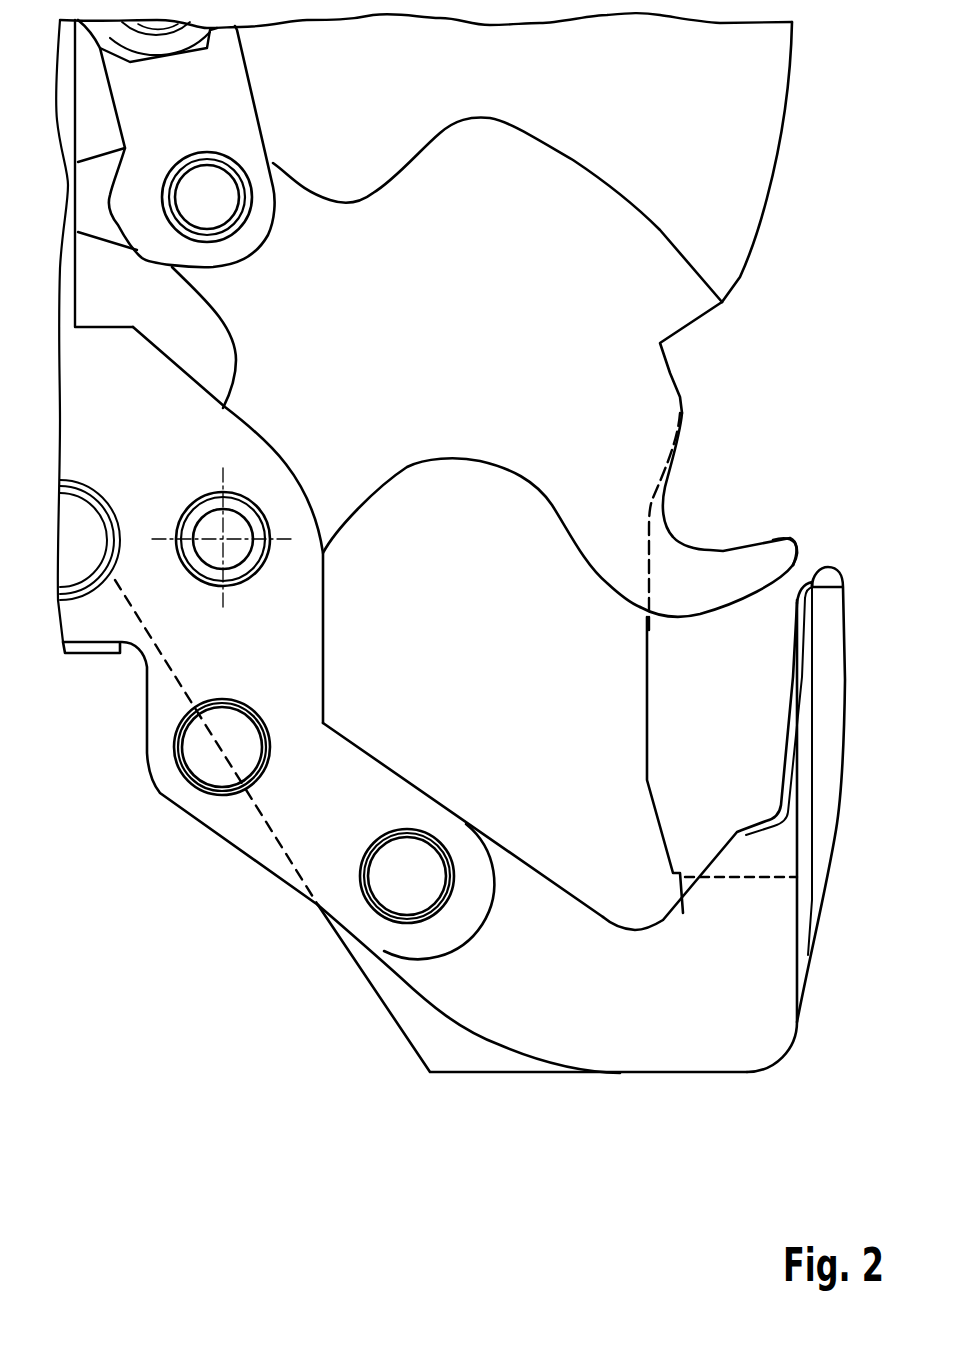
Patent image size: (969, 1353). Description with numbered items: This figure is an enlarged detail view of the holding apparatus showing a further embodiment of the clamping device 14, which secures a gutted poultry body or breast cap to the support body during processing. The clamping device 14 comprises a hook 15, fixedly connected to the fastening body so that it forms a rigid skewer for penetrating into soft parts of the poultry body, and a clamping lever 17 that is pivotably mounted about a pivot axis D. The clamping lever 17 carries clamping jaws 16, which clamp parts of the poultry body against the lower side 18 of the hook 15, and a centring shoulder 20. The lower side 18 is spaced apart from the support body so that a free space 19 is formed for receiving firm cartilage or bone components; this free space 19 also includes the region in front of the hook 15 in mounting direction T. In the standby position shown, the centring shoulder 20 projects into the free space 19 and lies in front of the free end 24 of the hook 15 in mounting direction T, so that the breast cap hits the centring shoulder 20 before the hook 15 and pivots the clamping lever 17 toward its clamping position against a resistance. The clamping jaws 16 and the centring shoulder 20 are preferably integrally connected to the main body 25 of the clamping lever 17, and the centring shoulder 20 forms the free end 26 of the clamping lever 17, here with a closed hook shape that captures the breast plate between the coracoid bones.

The clamping device 14 is at (775, 513).
The hook 15 is at (827, 667).
The clamping jaws 16 is at (593, 217).
The clamping lever 17 is at (455, 440).
The lower side of the hook 18 is at (797, 628).
The free space 19 is at (737, 517).
The centring shoulder 20 is at (708, 577).
The free end of the hook 24 is at (812, 582).
The main body of the clamping lever 25 is at (447, 220).
The free end of the clamping lever 26 is at (800, 551).
The pivot axis D is at (222, 538).
The mounting direction T is at (807, 125).